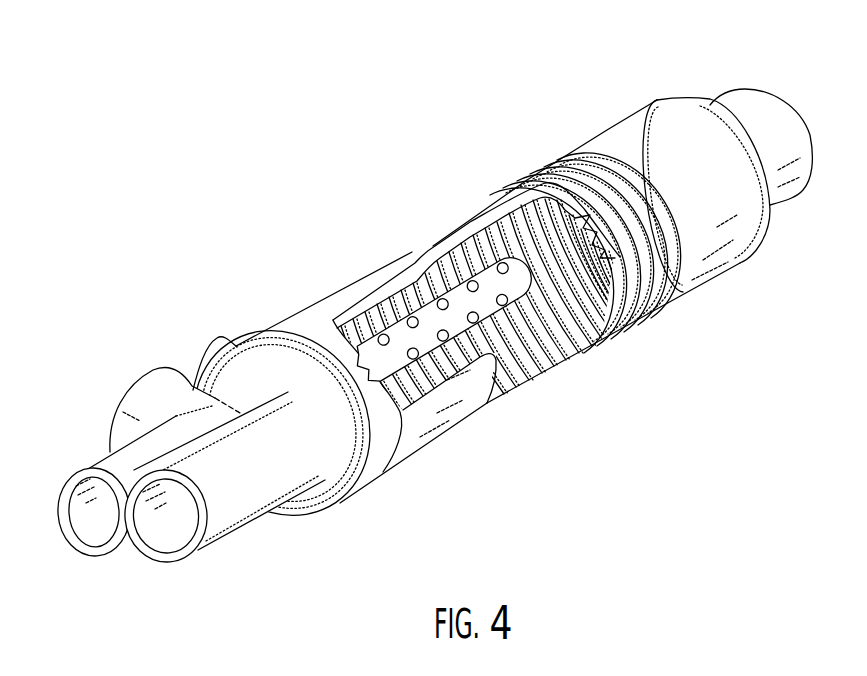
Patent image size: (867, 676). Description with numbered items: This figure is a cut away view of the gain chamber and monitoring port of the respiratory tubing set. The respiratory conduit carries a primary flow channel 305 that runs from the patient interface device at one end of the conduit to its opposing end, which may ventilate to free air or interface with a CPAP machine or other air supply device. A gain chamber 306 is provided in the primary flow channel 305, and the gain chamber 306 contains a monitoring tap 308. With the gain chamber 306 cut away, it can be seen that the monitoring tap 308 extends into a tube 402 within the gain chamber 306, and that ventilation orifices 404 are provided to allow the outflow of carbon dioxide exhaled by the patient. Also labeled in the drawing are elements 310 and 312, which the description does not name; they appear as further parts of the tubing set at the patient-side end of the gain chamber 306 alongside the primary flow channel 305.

The primary flow channel 305 is at (212, 532).
The gain chamber 306 is at (677, 290).
The monitoring tap 308 is at (197, 346).
The inner tube 310 is at (74, 478).
The jacket flap 312 is at (127, 403).
The tube 402 is at (351, 289).
The ventilation orifices 404 is at (390, 290).